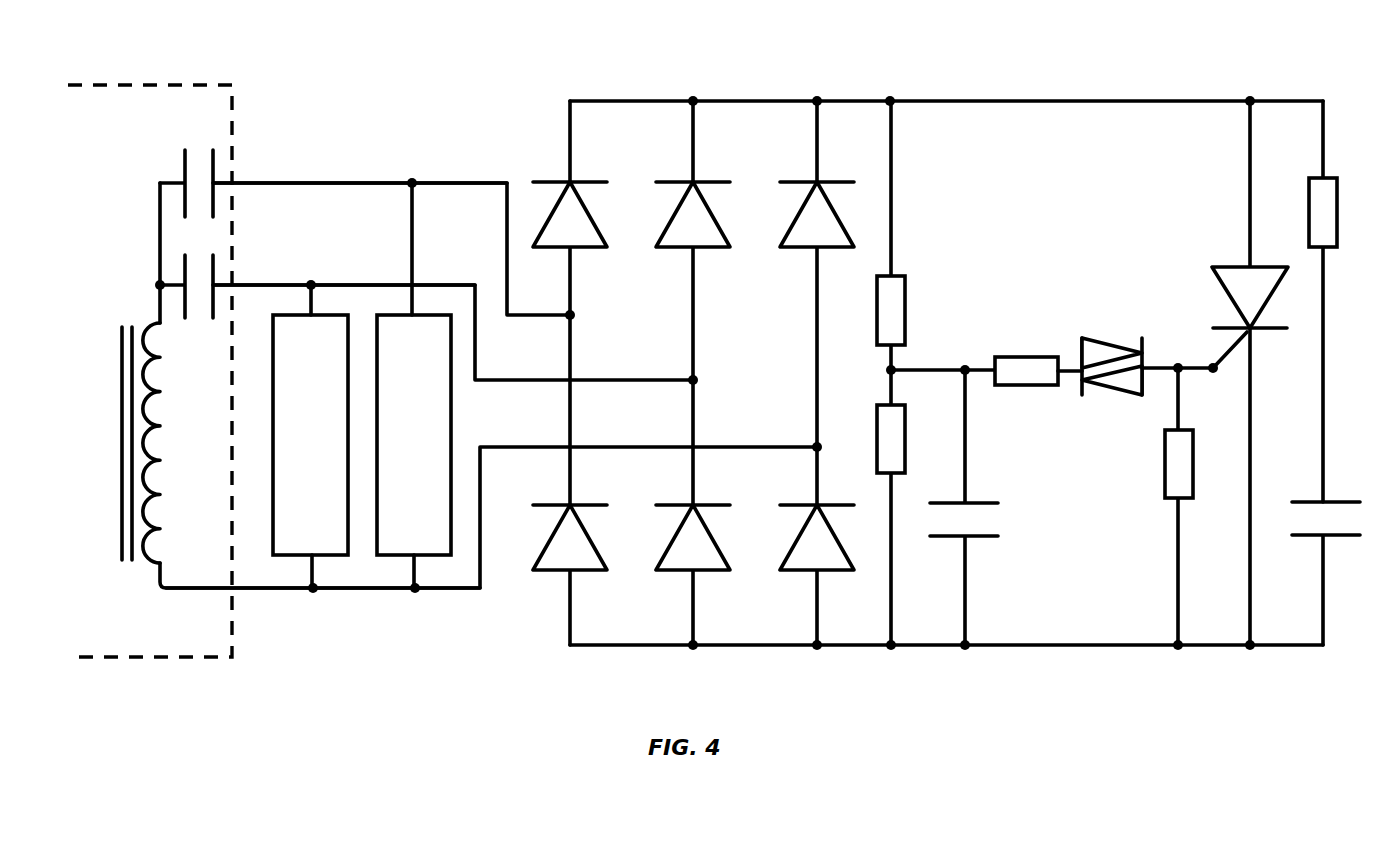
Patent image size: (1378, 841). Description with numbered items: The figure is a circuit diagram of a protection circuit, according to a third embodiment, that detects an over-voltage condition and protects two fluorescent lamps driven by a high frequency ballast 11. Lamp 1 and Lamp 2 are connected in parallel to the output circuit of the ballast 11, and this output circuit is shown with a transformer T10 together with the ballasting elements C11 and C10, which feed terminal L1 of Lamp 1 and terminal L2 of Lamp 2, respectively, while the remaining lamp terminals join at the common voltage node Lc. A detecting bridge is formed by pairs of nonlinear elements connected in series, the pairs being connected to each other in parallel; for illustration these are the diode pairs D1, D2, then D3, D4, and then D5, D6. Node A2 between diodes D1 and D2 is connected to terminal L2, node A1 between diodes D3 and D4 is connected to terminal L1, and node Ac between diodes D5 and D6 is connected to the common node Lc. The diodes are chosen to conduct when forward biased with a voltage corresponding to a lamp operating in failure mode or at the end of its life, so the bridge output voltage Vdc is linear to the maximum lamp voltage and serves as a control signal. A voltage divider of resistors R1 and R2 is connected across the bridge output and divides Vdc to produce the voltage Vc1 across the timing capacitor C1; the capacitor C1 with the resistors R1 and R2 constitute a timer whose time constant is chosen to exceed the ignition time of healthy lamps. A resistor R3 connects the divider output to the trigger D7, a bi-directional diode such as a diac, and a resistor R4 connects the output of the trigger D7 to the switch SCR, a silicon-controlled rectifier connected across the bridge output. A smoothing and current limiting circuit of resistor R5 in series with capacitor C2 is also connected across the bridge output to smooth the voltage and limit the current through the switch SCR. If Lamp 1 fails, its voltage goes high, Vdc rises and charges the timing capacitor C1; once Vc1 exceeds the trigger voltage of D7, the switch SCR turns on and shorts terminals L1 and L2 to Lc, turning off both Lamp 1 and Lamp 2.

The high frequency ballast 11 is at (176, 85).
The ballasting element C10 is at (333, 169).
The ballasting element C11 is at (317, 272).
The transformer T10 is at (457, 385).
The lamp terminal L1 is at (453, 314).
The lamp terminal L2 is at (391, 233).
The common voltage node Lc is at (323, 609).
The fluorescent lamp Lamp 1 is at (313, 475).
The fluorescent lamp Lamp 2 is at (426, 403).
The diode D1 is at (580, 208).
The diode D2 is at (582, 480).
The diode D3 is at (703, 240).
The diode D4 is at (704, 512).
The diode D5 is at (826, 274).
The diode D6 is at (827, 546).
The trigger D7 is at (1147, 352).
The bridge node A1 is at (711, 389).
The bridge node A2 is at (589, 327).
The bridge node Ac is at (833, 452).
The output voltage of detecting bridge Vdc is at (946, 86).
The resistor R1 is at (909, 235).
The resistor R2 is at (909, 507).
The resistor R3 is at (1038, 355).
The resistor R4 is at (1191, 504).
The resistor R5 is at (1307, 301).
The divided voltage Vc1 is at (940, 352).
The timing capacitor C1 is at (965, 507).
The series capacitor C2 is at (1320, 558).
The switch SCR is at (1232, 373).